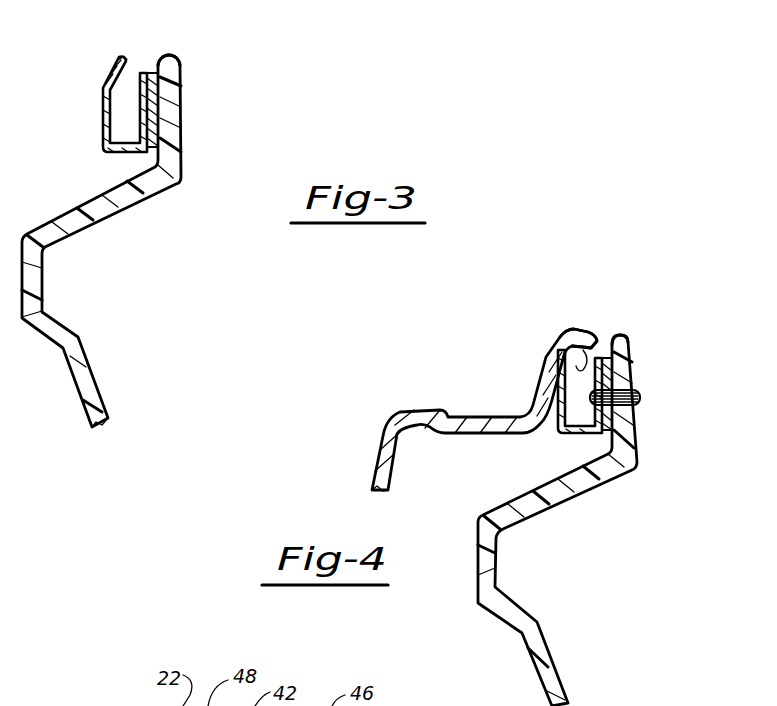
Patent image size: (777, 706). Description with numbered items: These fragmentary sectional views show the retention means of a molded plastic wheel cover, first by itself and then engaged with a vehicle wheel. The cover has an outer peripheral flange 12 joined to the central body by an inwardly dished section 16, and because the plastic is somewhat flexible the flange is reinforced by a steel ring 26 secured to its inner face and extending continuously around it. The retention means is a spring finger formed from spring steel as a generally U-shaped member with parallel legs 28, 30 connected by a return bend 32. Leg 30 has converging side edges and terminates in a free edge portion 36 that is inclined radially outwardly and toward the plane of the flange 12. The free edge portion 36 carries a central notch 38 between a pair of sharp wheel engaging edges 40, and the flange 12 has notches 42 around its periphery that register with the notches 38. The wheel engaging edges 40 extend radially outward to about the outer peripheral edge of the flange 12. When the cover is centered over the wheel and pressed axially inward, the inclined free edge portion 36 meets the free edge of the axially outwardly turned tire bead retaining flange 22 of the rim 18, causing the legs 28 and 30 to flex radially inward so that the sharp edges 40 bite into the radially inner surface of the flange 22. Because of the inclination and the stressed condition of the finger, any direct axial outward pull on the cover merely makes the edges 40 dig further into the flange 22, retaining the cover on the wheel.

In FIG. 3, the outer peripheral flange 12 is at (174, 128).
In FIG. 3, the inwardly dished section 16 is at (43, 283).
In FIG. 4, the inwardly dished section 16 is at (494, 563).
In FIG. 4, the rim 18 is at (368, 455).
In FIG. 4, the tire bead retaining flange 22 is at (588, 332).
In FIG. 3, the steel ring 26 is at (153, 100).
In FIG. 4, the steel ring 26 is at (609, 372).
In FIG. 3, the leg 28 is at (140, 118).
In FIG. 3, the leg 30 is at (103, 125).
In FIG. 4, the leg 30 is at (580, 391).
In FIG. 3, the return bend 32 is at (121, 152).
In FIG. 3, the free edge portion 36 is at (116, 68).
In FIG. 4, the free edge portion 36 is at (576, 373).
In FIG. 3, the central notch 38 is at (118, 60).
In FIG. 3, the wheel engaging edges 40 is at (123, 58).
In FIG. 3, the notches 42 is at (167, 62).
In FIG. 4, the notches 42 is at (625, 342).